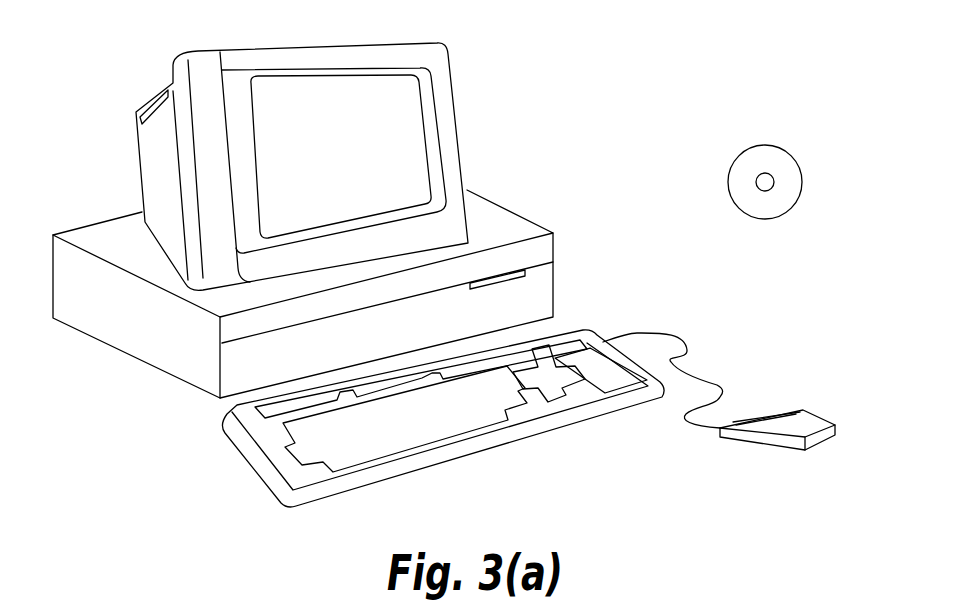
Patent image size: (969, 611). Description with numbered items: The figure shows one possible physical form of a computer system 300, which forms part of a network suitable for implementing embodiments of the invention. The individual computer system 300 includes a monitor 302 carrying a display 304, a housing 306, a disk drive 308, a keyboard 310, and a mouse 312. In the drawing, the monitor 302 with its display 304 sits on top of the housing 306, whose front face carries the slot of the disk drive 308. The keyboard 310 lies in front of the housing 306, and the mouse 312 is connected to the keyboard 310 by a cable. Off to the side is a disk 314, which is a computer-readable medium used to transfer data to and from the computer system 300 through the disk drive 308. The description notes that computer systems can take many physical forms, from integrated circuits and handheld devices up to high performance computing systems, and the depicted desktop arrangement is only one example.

The computer system 300 is at (451, 270).
The monitor 302 is at (462, 167).
The display 304 is at (417, 110).
The housing 306 is at (183, 288).
The disk drive 308 is at (526, 266).
The keyboard 310 is at (447, 462).
The mouse 312 is at (803, 412).
The disk 314 is at (783, 147).